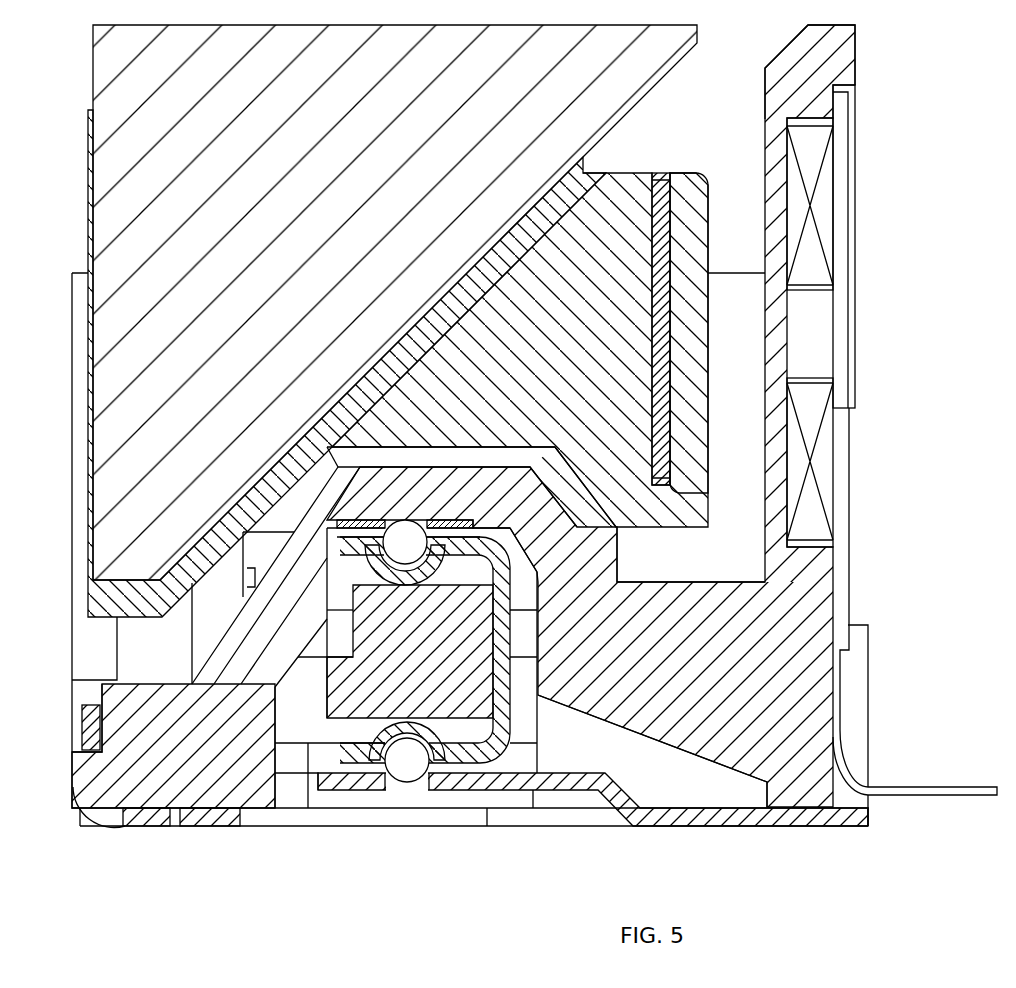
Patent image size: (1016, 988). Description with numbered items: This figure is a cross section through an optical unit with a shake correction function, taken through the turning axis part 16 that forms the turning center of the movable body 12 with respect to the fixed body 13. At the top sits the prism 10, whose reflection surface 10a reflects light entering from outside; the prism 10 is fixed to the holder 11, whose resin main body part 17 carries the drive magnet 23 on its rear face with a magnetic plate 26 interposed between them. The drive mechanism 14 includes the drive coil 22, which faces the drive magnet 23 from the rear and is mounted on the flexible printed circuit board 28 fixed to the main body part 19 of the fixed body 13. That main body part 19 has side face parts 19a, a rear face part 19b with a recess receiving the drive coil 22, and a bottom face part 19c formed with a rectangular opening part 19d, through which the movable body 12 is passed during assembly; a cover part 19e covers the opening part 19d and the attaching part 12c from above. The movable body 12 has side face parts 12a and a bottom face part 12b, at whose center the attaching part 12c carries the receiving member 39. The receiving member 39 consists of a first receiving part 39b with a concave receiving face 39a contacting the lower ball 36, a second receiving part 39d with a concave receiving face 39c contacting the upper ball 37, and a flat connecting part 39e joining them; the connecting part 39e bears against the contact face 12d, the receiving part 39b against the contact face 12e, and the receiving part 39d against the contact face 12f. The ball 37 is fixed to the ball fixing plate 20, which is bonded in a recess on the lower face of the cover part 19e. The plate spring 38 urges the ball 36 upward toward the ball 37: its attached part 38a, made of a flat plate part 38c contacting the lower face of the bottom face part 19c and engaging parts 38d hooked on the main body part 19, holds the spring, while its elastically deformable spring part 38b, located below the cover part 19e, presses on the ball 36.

The prism 10 is at (698, 32).
The reflection surface 10a is at (527, 250).
The holder 11 is at (520, 321).
The main body part 17 is at (612, 172).
The magnetic plate 26 is at (661, 175).
The drive magnet 23 is at (692, 175).
The side face parts 19a is at (746, 272).
The rear face part 19b is at (856, 30).
The flexible printed circuit board 28 is at (856, 152).
The drive coil 22 is at (848, 207).
The drive mechanism 14 is at (893, 355).
The cover part 19e is at (505, 447).
The ball 37 is at (398, 519).
The ball fixing plate 20 is at (463, 519).
The contact face 12f is at (486, 528).
The side face parts 12a is at (618, 555).
The receiving member 39 is at (490, 650).
The connecting part 39e is at (538, 585).
The attaching part 12c is at (583, 672).
The contact face 12d is at (538, 645).
The receiving face 39c is at (422, 582).
The receiving part 39d is at (373, 586).
The receiving part 39b is at (397, 725).
The receiving face 39a is at (462, 746).
The fixed body 13 is at (662, 425).
The main body part 19 is at (838, 580).
The engaging parts 38d is at (88, 702).
The bottom face part 19c is at (165, 827).
The movable body 12 is at (316, 787).
The bottom face part 12b is at (308, 778).
The plate spring 38 is at (583, 827).
The spring part 38b is at (365, 792).
The turning axis part 16 is at (406, 866).
The ball 36 is at (408, 783).
The contact face 12e is at (464, 792).
The attached part 38a is at (752, 845).
The flat plate part 38c is at (700, 812).
The opening part 19d is at (750, 826).